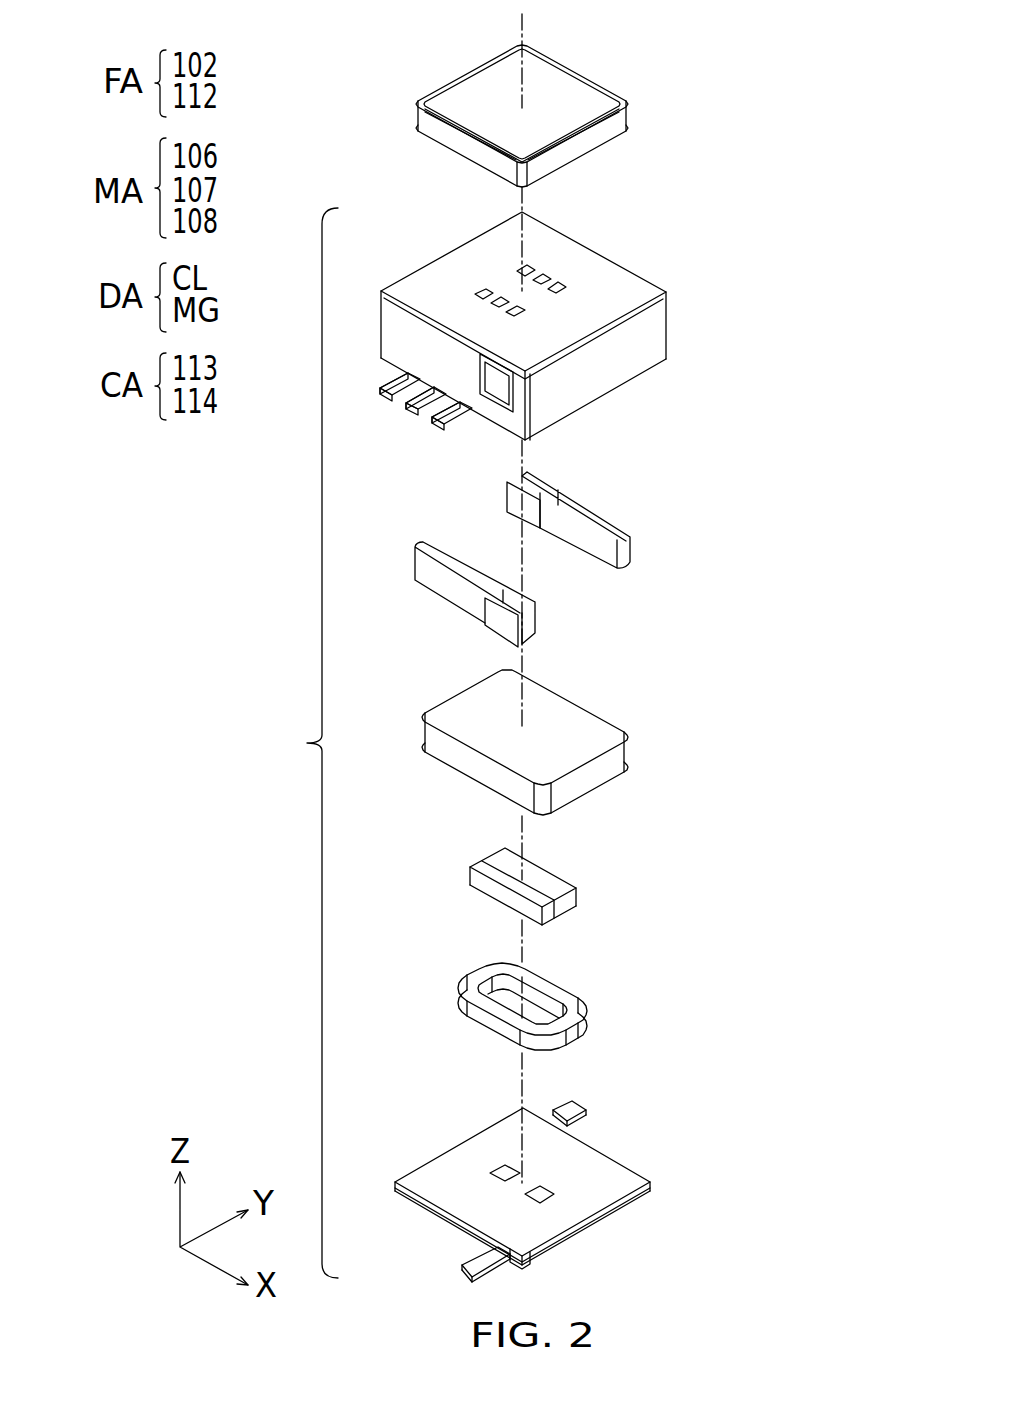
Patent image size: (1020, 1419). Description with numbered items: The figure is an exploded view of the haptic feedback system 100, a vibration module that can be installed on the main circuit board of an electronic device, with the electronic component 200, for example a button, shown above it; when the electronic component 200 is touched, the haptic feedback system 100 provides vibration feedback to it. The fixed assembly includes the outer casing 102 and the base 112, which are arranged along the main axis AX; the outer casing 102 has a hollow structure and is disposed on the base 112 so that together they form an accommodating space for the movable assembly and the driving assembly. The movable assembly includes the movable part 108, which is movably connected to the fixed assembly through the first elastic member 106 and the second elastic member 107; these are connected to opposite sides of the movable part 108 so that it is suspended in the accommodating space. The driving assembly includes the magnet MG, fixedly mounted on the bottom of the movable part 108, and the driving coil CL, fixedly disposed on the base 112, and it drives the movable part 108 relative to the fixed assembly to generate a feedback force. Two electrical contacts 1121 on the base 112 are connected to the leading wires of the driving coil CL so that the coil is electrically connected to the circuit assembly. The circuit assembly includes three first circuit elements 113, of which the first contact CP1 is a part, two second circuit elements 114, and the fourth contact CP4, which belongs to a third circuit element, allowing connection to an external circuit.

The haptic feedback system 100 is at (297, 743).
The electronic component 200 is at (641, 117).
The outer casing 102 is at (562, 344).
The base 112 is at (563, 1204).
The electrical contacts 1121 is at (548, 1190).
The first elastic member 106 is at (435, 607).
The second elastic member 107 is at (642, 548).
The movable part 108 is at (633, 748).
The driving coil CL is at (598, 1018).
The magnet MG is at (583, 895).
The first circuit elements 113 is at (435, 427).
The second circuit elements 114 is at (463, 1277).
The first contact CP1 is at (480, 291).
The fourth contact CP4 is at (563, 283).
The main axis AX is at (521, 591).